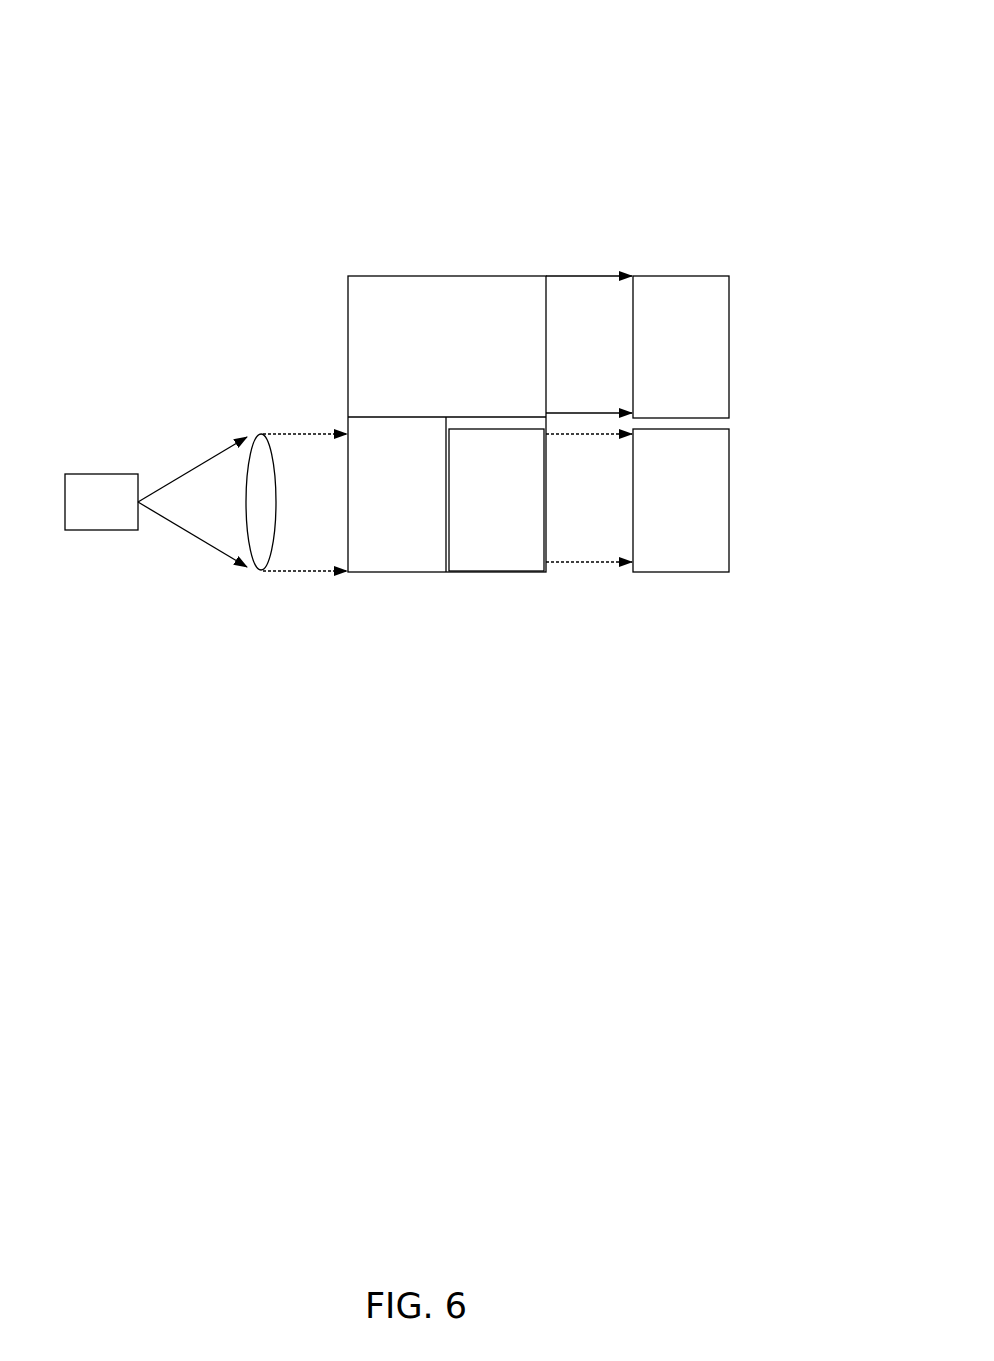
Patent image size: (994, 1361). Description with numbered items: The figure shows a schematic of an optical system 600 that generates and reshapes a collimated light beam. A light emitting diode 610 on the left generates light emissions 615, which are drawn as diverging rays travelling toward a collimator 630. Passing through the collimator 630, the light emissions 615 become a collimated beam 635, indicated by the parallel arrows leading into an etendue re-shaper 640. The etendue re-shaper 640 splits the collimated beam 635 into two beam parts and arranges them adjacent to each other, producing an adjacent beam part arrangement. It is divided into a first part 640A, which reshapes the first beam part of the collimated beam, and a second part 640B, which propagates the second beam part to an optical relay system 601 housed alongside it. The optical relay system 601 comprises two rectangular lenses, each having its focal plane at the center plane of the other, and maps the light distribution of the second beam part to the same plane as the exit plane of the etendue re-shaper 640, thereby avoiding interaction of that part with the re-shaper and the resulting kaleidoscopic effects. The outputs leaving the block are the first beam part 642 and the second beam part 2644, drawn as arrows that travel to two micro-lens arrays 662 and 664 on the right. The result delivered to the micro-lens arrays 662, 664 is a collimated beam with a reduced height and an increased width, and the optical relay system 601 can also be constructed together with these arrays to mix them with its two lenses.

The optical system 600 is at (790, 70).
The light emitting diode 610 is at (81, 514).
The light emissions 615 is at (212, 553).
The collimator 630 is at (252, 432).
The collimated beam 635 is at (307, 577).
The etendue re-shaper 640 is at (406, 401).
The first part of the etendue re-shaper 640A is at (417, 361).
The second part of the etendue re-shaper 640B is at (367, 509).
The optical relay system 601 is at (476, 509).
The first beam part 642 is at (570, 278).
The output light beam 2644 is at (580, 562).
The first micro-lens array 662 is at (660, 361).
The second micro-lens array 664 is at (660, 509).